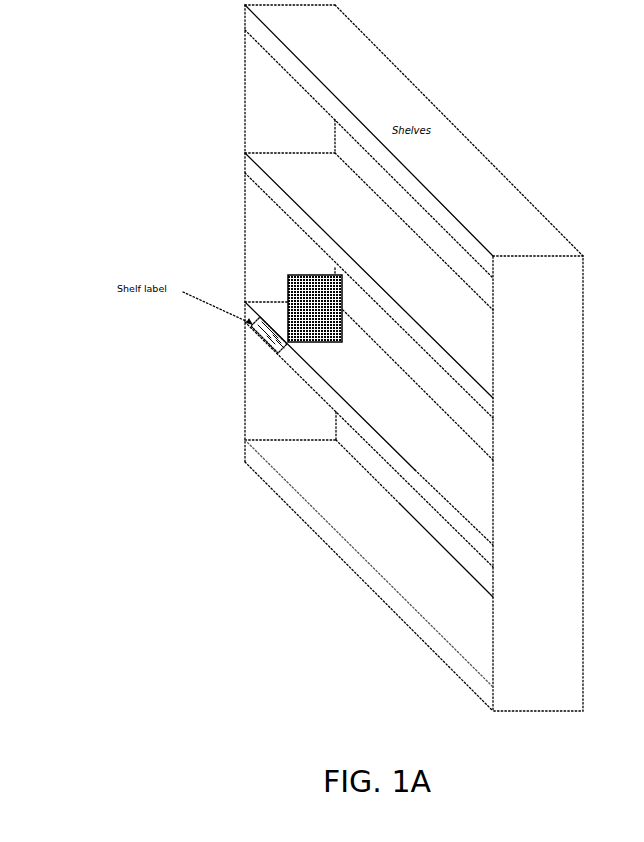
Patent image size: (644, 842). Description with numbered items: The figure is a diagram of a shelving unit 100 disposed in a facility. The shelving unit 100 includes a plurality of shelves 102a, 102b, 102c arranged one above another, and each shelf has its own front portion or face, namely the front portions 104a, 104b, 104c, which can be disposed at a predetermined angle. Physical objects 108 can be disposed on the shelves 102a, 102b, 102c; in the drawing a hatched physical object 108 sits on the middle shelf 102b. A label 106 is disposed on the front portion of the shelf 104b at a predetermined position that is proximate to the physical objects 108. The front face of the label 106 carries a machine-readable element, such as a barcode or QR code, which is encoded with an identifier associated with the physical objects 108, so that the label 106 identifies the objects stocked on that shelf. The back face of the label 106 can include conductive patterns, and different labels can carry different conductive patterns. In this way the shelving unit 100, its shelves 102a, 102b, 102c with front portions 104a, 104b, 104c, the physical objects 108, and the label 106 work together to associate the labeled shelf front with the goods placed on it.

The shelving unit 100 is at (470, 163).
The shelf 102a is at (285, 163).
The shelf 102b is at (385, 415).
The shelf 102c is at (323, 497).
The front portion of the shelf 104a is at (258, 172).
The front portion of the shelf 104b is at (462, 525).
The front portion of the shelf 104c is at (452, 655).
The label 106 is at (262, 331).
The physical objects 108 is at (291, 305).